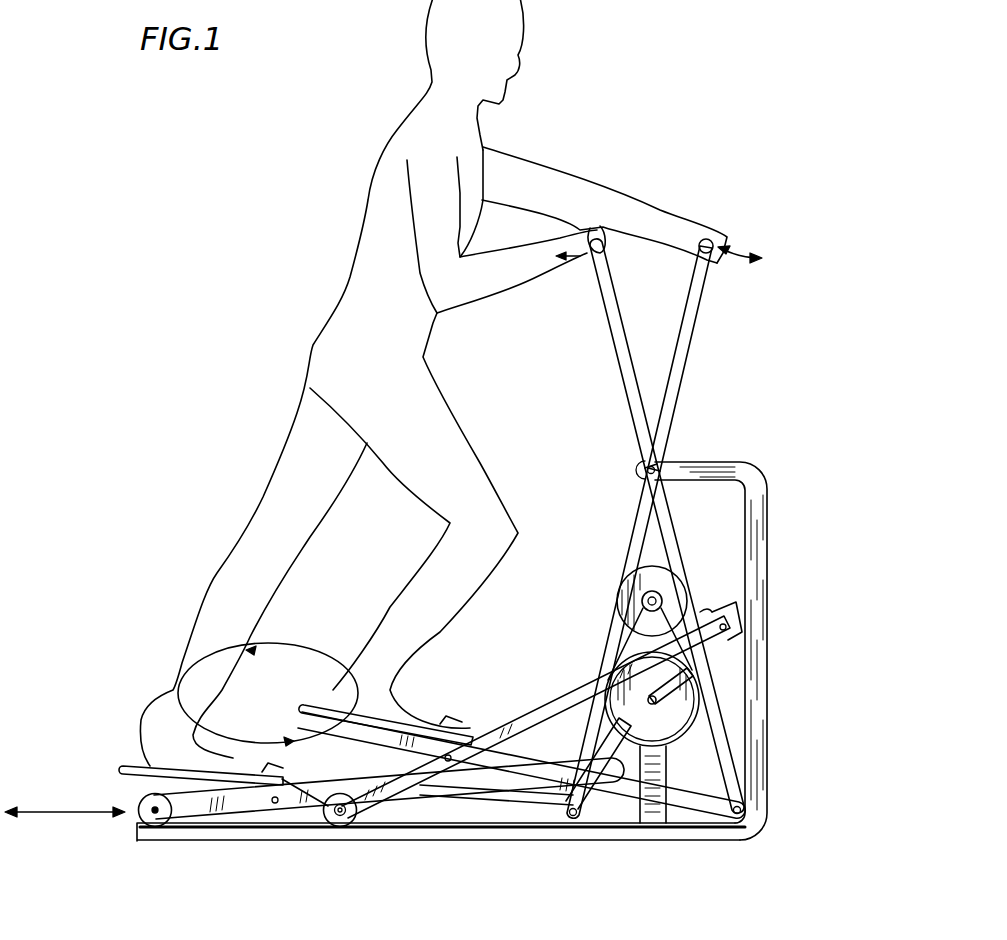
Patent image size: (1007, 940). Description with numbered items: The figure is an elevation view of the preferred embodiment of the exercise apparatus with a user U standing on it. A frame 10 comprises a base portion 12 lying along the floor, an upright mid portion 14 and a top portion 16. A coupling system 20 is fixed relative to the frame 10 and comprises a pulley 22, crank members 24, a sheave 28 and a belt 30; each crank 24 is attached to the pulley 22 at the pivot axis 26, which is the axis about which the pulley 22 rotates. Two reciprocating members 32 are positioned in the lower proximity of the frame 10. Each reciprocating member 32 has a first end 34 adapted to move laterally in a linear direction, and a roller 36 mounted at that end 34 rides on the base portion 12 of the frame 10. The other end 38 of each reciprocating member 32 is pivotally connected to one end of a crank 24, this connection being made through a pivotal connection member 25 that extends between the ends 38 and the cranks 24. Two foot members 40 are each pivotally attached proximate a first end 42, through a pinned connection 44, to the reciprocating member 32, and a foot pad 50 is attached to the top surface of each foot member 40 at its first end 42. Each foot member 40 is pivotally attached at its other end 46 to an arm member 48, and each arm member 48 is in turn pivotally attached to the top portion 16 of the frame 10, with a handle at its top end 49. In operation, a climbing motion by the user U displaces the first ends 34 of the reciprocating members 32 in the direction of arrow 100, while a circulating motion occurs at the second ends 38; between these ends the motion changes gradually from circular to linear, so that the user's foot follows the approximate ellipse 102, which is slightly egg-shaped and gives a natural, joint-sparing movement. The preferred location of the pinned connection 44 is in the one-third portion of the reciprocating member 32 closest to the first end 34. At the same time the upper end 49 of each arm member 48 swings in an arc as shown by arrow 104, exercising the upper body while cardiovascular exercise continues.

The frame 10 is at (445, 657).
The base portion 12 is at (335, 841).
The mid portion 14 is at (770, 500).
The top portion 16 is at (705, 462).
The coupling system 20 is at (700, 713).
The pulley 22 is at (612, 683).
The crank member 24 is at (585, 745).
The pivotal connection member 25 is at (742, 624).
The pivot axis 26 is at (635, 575).
The sheave 28 is at (645, 600).
The belt 30 is at (625, 640).
The reciprocating member 32 is at (432, 767).
The first end of reciprocating member 34 is at (167, 812).
The roller 36 is at (360, 833).
The second end of reciprocating member 38 is at (707, 617).
The foot member 40 is at (600, 780).
The first end of foot member 42 is at (400, 737).
The pinned connection 44 is at (480, 793).
The other end of foot member 46 is at (745, 825).
The arm member 48 is at (678, 343).
The top end of arm member 49 is at (710, 247).
The foot pad 50 is at (145, 765).
The arrow 100 is at (65, 789).
The approximate ellipse 102 is at (210, 657).
The arrow 104 is at (740, 255).
The user U is at (318, 312).